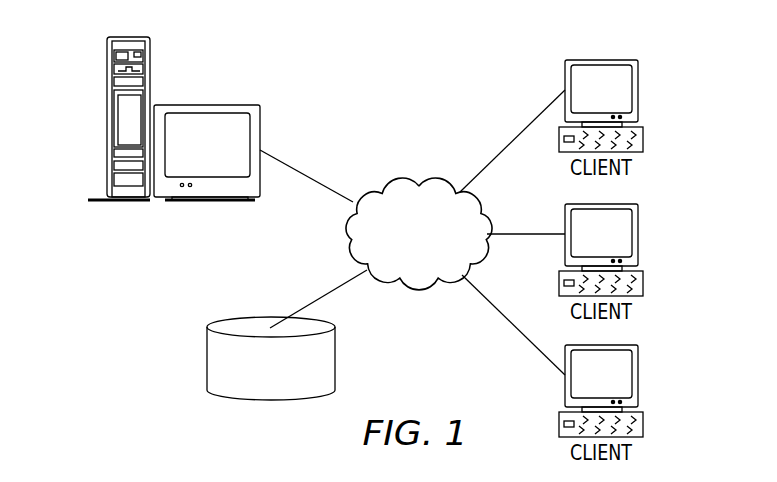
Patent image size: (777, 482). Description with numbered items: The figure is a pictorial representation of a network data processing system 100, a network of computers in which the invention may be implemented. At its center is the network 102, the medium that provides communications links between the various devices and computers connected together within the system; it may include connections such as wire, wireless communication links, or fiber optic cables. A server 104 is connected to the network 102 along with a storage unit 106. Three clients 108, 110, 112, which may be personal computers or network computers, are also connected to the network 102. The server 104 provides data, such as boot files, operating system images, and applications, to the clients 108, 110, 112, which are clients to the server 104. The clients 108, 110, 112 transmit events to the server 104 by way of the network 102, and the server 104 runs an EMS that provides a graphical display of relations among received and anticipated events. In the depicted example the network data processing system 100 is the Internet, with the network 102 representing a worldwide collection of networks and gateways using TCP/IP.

The network data processing system 100 is at (471, 70).
The network 102 is at (392, 187).
The server 104 is at (107, 119).
The storage unit 106 is at (207, 360).
The client 108 is at (638, 90).
The client 110 is at (637, 234).
The client 112 is at (637, 375).